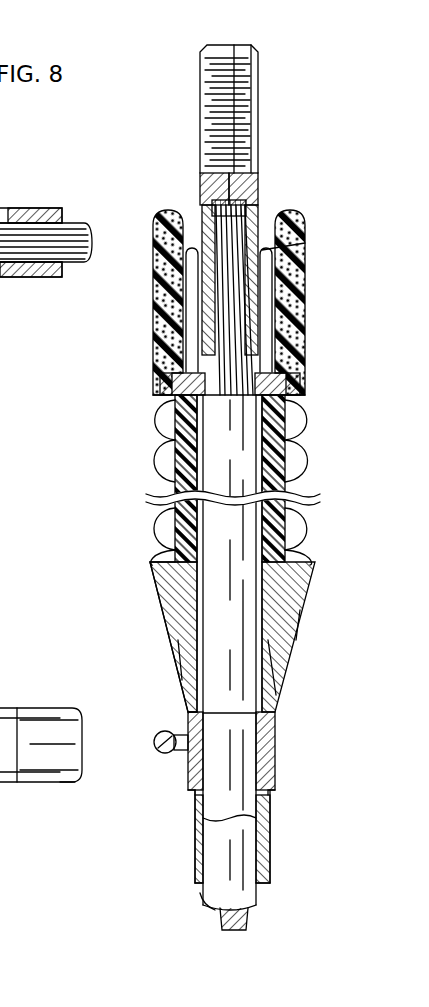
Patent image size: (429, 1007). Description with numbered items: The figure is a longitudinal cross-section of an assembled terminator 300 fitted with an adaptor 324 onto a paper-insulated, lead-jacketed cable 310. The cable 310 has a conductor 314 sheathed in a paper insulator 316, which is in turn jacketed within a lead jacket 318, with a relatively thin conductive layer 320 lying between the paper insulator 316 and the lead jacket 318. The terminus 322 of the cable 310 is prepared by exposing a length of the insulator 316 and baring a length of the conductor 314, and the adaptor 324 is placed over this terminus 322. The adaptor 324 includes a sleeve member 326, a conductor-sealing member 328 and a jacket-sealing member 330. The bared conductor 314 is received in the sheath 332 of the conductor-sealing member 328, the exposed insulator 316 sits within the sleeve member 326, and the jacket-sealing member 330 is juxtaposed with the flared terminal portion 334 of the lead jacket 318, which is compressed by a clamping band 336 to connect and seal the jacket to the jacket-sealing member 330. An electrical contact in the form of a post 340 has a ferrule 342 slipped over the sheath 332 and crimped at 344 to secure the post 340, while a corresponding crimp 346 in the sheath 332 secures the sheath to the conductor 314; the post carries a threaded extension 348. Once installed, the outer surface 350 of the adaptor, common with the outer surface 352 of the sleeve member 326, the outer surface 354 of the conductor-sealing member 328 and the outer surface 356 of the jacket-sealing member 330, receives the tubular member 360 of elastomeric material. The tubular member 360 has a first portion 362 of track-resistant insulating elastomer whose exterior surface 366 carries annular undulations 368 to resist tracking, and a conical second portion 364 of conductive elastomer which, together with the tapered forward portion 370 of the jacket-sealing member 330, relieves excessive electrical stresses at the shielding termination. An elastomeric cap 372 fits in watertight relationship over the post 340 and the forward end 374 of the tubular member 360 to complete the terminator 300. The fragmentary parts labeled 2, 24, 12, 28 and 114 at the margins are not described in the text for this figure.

The cable 2 is at (22, 210).
The center conductor 24 is at (35, 247).
The connector shell 12 is at (69, 778).
The tubular member 28 is at (62, 725).
The knurled collar 114 is at (30, 710).
The terminator 300 is at (150, 433).
The cable 310 is at (202, 905).
The conductor 314 is at (307, 243).
The paper insulator 316 is at (238, 433).
The lead jacket 318 is at (268, 866).
The conductive layer 320 is at (247, 805).
The terminus 322 is at (245, 210).
The adaptor 324 is at (152, 566).
The sleeve member 326 is at (168, 503).
The conductor-sealing member 328 is at (307, 333).
The jacket-sealing member 330 is at (190, 678).
The sheath 332 is at (232, 262).
The flared terminal portion 334 is at (185, 722).
The clamping band 336 is at (278, 746).
The post 340 is at (206, 188).
The ferrule 342 is at (258, 200).
The crimp 344 is at (205, 290).
The crimp 346 is at (210, 270).
The threaded extension 348 is at (260, 52).
The outer surface 350 is at (162, 462).
The outer surface of the sleeve member 352 is at (150, 530).
The outer surface of the conductor-sealing member 354 is at (305, 384).
The outer surface of the jacket-sealing member 356 is at (296, 644).
The tubular member 360 is at (322, 530).
The first portion 362 is at (314, 556).
The second portion 364 is at (305, 612).
The exterior surface 366 is at (313, 502).
The annular undulations 368 is at (318, 455).
The forward portion 370 is at (276, 696).
The cap 372 is at (165, 222).
The forward end 374 is at (162, 392).